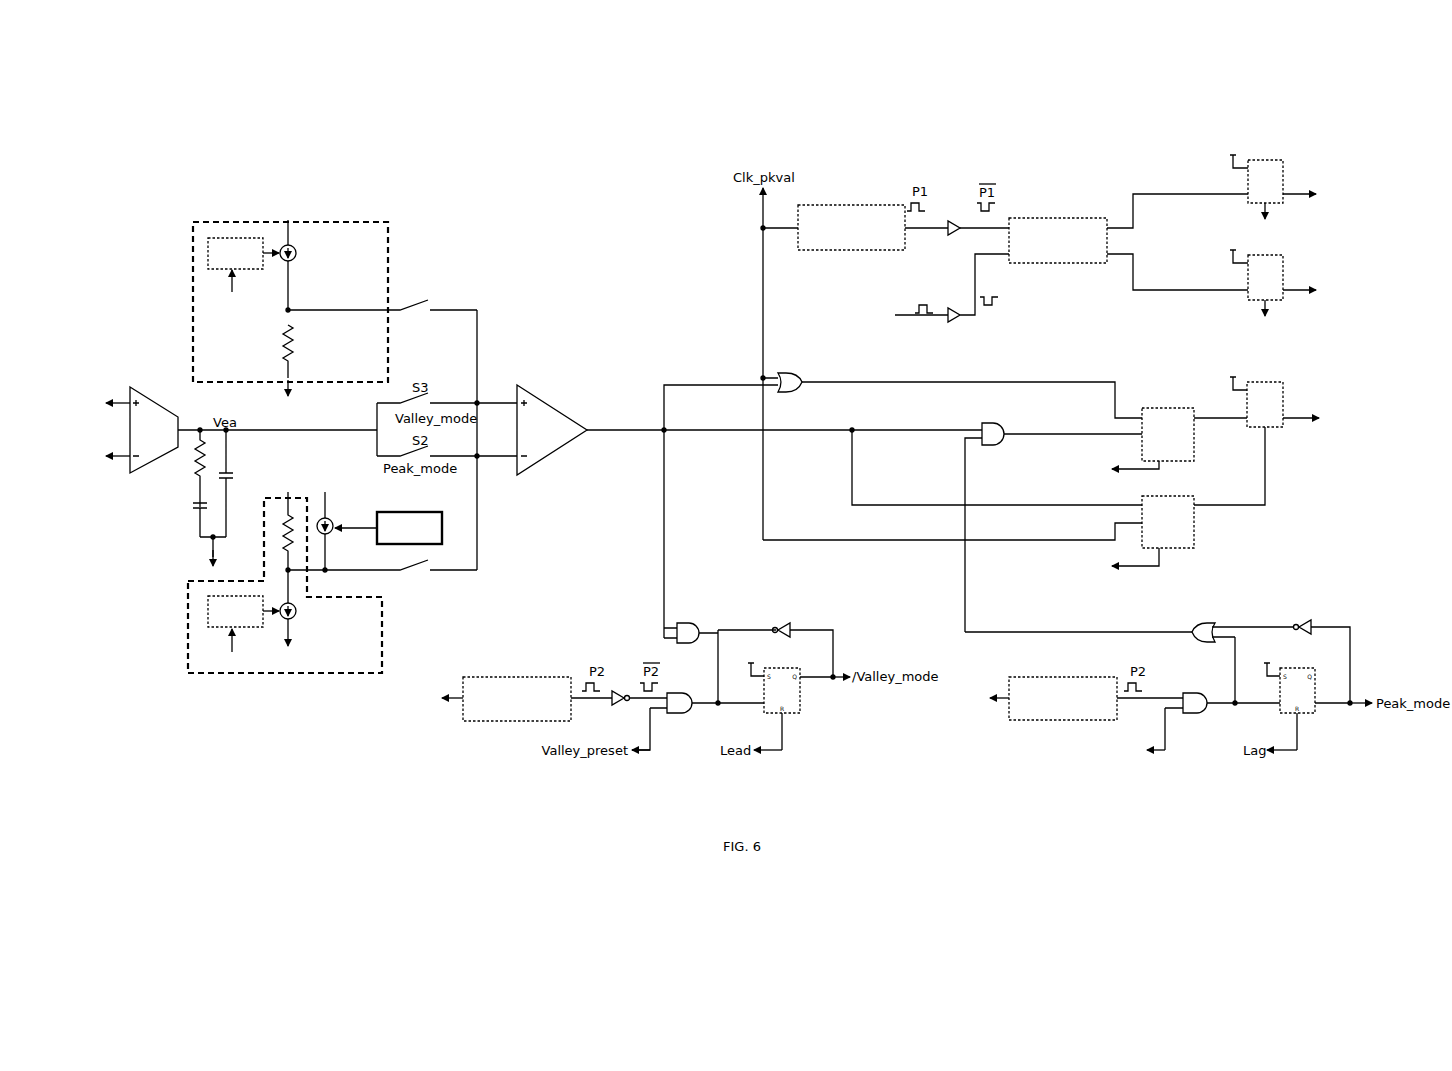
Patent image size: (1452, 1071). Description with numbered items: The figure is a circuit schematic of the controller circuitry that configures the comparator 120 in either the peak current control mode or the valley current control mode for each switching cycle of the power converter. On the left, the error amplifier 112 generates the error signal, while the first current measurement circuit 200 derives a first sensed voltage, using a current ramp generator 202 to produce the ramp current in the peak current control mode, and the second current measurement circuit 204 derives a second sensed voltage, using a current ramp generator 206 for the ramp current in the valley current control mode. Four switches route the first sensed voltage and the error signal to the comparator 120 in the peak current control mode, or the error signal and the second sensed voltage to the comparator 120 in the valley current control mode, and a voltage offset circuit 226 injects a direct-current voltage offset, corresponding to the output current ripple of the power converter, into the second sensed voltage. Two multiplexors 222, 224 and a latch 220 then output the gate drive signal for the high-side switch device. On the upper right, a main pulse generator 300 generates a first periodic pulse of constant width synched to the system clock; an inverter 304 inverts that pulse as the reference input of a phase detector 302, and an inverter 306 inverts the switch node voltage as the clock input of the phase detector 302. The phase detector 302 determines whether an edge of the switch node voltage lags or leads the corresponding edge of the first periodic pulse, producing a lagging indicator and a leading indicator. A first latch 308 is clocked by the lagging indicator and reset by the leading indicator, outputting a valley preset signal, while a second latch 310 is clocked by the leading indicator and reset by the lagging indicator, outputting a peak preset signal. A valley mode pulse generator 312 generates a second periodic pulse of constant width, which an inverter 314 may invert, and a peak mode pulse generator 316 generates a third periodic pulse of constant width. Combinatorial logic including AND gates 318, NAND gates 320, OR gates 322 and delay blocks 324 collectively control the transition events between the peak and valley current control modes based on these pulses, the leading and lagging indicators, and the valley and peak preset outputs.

The error amplifier 112 is at (124, 430).
The comparator 120 is at (532, 430).
The first current measurement circuit 200 is at (335, 301).
The current ramp generator 202 is at (243, 272).
The second current measurement circuit 204 is at (332, 575).
The current ramp generator 206 is at (242, 631).
The latch 220 is at (1309, 402).
The multiplexor 222 is at (1135, 442).
The multiplexor 224 is at (1151, 500).
The voltage offset circuit 226 is at (392, 511).
The main pulse generator 300 is at (855, 227).
The phase detector 302 is at (1128, 245).
The inverter 304 is at (952, 219).
The inverter 306 is at (952, 307).
The first latch 308 is at (1317, 192).
The second latch 310 is at (1314, 288).
The valley mode pulse generator 312 is at (498, 699).
The inverter 314 is at (617, 706).
The peak mode pulse generator 316 is at (1055, 698).
The AND gate 318 is at (990, 422).
The NAND gate 320 is at (1188, 692).
The OR gate 322 is at (784, 372).
The delay block 324 is at (784, 622).